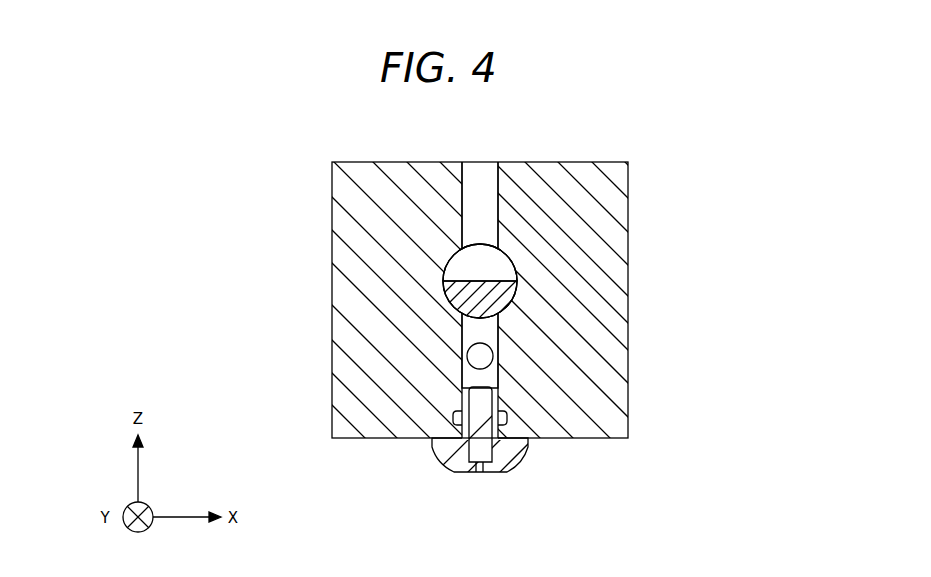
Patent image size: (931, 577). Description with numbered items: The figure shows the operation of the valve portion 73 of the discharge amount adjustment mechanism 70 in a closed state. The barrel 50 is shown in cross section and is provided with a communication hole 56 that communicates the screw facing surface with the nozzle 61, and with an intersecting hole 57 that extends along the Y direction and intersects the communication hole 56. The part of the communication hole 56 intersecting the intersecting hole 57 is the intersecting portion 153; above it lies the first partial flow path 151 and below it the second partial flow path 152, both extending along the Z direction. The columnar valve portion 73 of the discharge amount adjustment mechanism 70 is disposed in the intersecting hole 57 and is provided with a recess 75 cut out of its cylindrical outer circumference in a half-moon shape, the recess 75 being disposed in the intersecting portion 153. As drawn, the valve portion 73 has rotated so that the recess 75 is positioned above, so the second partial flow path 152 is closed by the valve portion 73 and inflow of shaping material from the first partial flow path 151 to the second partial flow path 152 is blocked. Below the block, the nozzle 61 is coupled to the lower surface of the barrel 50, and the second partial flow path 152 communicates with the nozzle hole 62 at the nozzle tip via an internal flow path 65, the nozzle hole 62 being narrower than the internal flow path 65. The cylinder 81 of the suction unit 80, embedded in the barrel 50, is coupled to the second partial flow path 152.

The barrel 50 is at (697, 154).
The communication hole 56 is at (607, 275).
The intersecting hole 57 is at (449, 259).
The nozzle 61 is at (453, 471).
The nozzle hole 62 is at (480, 474).
The internal flow path 65 is at (500, 428).
The discharge amount adjustment mechanism 70 is at (377, 262).
The valve portion 73 is at (452, 288).
The recess 75 is at (465, 270).
The suction unit 80 is at (362, 355).
The cylinder 81 is at (467, 355).
The first partial flow path 151 is at (498, 216).
The second partial flow path 152 is at (499, 330).
The intersecting portion 153 is at (515, 265).